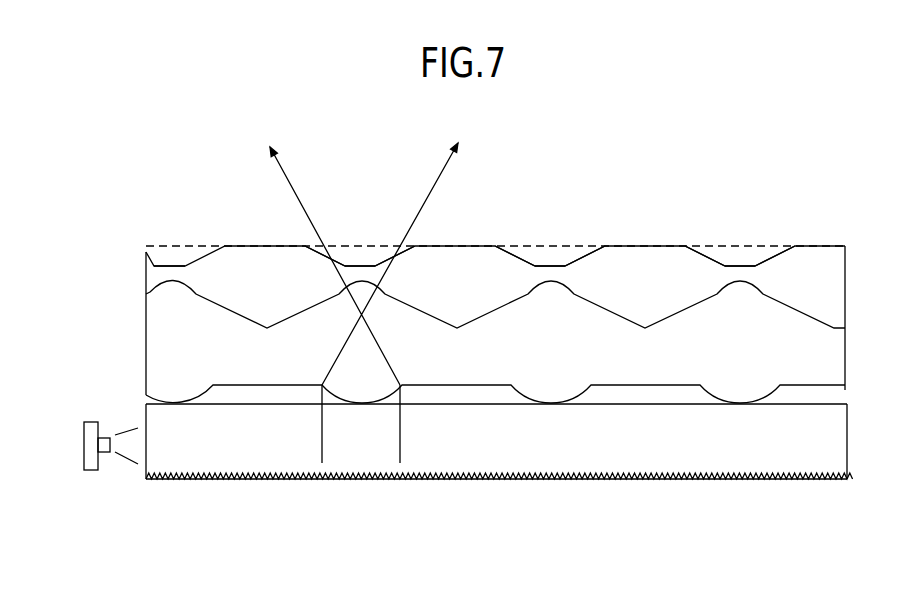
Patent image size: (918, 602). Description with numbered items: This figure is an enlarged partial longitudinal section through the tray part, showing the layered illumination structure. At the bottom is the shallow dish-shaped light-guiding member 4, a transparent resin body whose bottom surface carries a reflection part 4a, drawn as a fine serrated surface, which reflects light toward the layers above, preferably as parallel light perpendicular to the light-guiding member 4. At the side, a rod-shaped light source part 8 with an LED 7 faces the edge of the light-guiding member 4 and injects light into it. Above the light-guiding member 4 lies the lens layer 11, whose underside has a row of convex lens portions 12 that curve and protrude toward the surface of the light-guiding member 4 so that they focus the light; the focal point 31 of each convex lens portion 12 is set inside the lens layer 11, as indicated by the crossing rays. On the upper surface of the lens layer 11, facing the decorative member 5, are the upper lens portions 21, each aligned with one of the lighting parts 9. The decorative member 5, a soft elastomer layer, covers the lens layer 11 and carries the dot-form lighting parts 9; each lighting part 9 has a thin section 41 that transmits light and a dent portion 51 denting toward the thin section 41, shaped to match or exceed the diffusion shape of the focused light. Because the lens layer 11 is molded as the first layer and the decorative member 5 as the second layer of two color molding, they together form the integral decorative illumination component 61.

The light-guiding member 4 is at (797, 460).
The reflection part 4a is at (613, 462).
The decorative member 5 is at (793, 268).
The LED 7 is at (103, 438).
The light source part 8 is at (91, 410).
The lighting part 9 is at (474, 183).
The lens layer 11 is at (827, 350).
The convex lens portion 12 is at (195, 398).
The upper lens portion 21 is at (174, 281).
The focal point 31 is at (360, 308).
The thin section 41 is at (542, 264).
The dent portion 51 is at (578, 247).
The decorative illumination component 61 is at (495, 266).